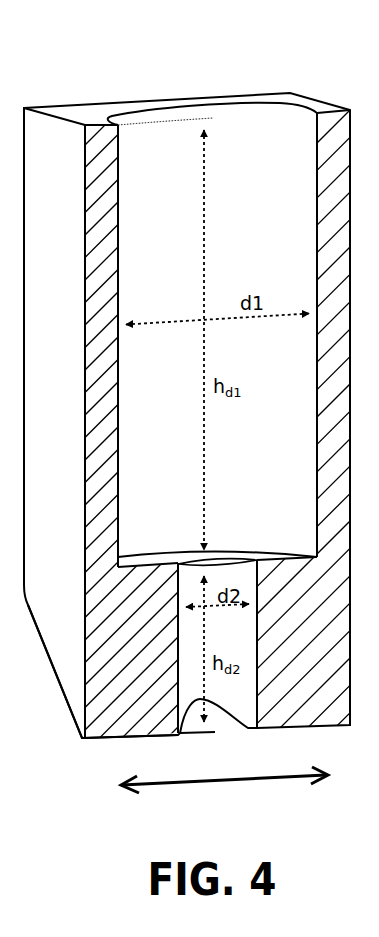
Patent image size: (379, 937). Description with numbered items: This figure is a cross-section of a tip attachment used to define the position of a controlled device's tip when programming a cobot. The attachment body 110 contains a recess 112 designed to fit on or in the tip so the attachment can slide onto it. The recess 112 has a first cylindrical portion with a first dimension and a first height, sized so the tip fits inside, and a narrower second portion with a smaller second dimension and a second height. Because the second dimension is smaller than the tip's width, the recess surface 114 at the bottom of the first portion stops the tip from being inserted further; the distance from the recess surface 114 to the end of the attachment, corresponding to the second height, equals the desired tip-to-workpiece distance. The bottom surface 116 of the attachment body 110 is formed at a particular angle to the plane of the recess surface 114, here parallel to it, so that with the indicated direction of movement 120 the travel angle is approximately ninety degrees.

The attachment body 110 is at (113, 656).
The recess 112 is at (253, 257).
The recess surface 114 is at (159, 560).
The bottom surface 116 is at (82, 740).
The direction of movement 120 is at (224, 792).